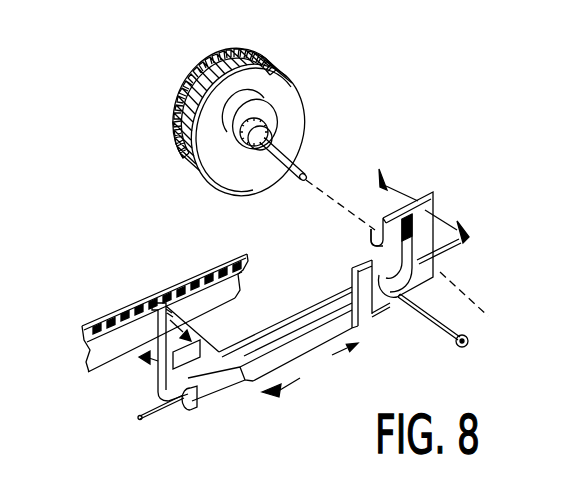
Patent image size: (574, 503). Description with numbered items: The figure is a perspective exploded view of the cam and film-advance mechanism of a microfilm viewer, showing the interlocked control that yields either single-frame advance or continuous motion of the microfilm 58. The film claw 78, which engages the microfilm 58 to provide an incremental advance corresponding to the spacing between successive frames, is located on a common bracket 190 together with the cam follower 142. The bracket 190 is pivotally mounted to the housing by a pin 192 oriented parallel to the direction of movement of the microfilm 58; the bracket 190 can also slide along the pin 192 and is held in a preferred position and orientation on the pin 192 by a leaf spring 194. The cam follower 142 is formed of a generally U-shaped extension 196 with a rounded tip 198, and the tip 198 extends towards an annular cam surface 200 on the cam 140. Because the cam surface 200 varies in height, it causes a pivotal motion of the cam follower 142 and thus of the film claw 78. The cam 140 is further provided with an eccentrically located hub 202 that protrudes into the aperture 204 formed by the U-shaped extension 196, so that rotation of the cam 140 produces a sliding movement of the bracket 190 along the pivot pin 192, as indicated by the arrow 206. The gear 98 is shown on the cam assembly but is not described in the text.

The drive gear 98 is at (237, 124).
The eccentrically located hub 202 is at (212, 63).
The cam 140 is at (288, 110).
The annular cam surface 200 is at (240, 175).
The cam follower 142 is at (398, 268).
The rounded tip 198 is at (377, 235).
The aperture 204 is at (392, 262).
The U-shaped extension 196 is at (465, 247).
The leaf spring 194 is at (437, 323).
The pin 192 is at (328, 314).
The bracket 190 is at (275, 332).
The film claw 78 is at (163, 303).
The microfilm 58 is at (102, 352).
The arrow 206 is at (306, 373).